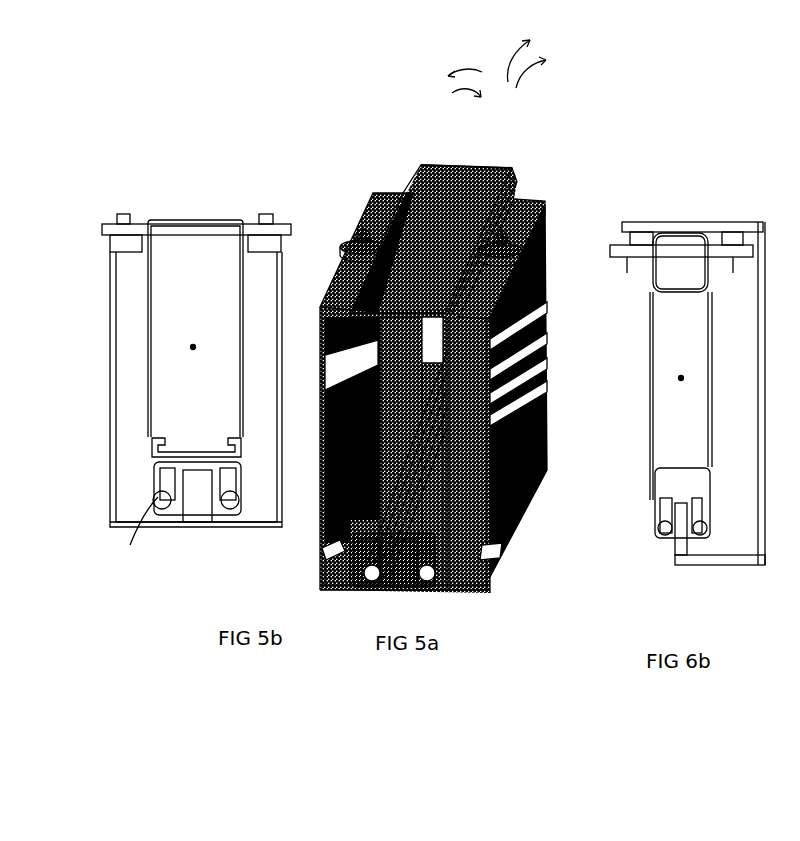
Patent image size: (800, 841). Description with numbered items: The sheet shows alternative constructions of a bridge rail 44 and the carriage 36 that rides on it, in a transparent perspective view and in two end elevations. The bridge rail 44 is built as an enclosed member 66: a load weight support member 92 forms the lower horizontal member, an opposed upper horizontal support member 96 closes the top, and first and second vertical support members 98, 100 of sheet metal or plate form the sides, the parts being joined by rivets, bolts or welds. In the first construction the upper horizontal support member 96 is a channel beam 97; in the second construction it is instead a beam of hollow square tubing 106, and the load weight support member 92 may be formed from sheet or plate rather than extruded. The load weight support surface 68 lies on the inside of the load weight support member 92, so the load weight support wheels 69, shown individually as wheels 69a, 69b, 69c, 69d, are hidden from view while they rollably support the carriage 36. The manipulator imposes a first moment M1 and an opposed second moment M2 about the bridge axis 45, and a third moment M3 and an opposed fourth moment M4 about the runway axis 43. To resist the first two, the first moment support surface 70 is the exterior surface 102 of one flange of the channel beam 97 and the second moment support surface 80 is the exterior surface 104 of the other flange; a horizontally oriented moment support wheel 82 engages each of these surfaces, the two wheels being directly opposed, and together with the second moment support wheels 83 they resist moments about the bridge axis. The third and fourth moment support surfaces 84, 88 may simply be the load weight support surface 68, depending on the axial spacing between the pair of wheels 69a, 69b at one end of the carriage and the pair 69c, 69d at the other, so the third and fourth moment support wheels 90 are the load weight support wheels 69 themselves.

In FIG. 5B, the carriage 36 is at (265, 529).
In FIG. 5A, the carriage 36 is at (490, 591).
In FIG. 6B, the carriage 36 is at (755, 566).
In FIG. 5A, the runway axis 43 is at (518, 355).
In FIG. 5B, the bridge rail 44 is at (213, 221).
In FIG. 5A, the bridge rail 44 is at (500, 165).
In FIG. 6B, the bridge rail 44 is at (651, 488).
In FIG. 5B, the bridge axis 45 is at (193, 347).
In FIG. 5A, the bridge axis 45 is at (500, 340).
In FIG. 6B, the bridge axis 45 is at (681, 378).
In FIG. 5B, the enclosed member 66 is at (147, 347).
In FIG. 6B, the enclosed member 66 is at (650, 418).
In FIG. 5B, the load weight support surface 68 is at (198, 587).
In FIG. 5A, the load weight support surface 68 is at (370, 612).
In FIG. 6B, the load weight support surface 68 is at (716, 583).
In FIG. 5B, the load weight support wheels 69 is at (185, 488).
In FIG. 5A, the load weight support wheels 69 is at (457, 466).
In FIG. 6B, the load weight support wheels 69 is at (676, 524).
In FIG. 5B, the load weight support wheel 69a is at (165, 478).
In FIG. 5A, the load weight support wheel 69a is at (325, 553).
In FIG. 6B, the load weight support wheel 69a is at (662, 510).
In FIG. 5B, the load weight support wheel 69b is at (228, 490).
In FIG. 5A, the load weight support wheel 69b is at (490, 553).
In FIG. 6B, the load weight support wheel 69b is at (697, 508).
In FIG. 5A, the load weight support wheel 69c is at (326, 350).
In FIG. 5A, the load weight support wheel 69d is at (516, 376).
In FIG. 5B, the first moment support surface 70 is at (92, 188).
In FIG. 6B, the first moment support surface 70 is at (632, 240).
In FIG. 5B, the second moment support surface 80 is at (264, 217).
In FIG. 6B, the second moment support surface 80 is at (740, 232).
In FIG. 5B, the moment support wheel 82 is at (128, 240).
In FIG. 5A, the moment support wheel 82 is at (366, 230).
In FIG. 6B, the moment support wheel 82 is at (629, 279).
In FIG. 5B, the second moment support wheels 83 is at (268, 257).
In FIG. 5A, the second moment support wheels 83 is at (549, 211).
In FIG. 6B, the second moment support wheels 83 is at (737, 280).
In FIG. 5B, the third moment support surface 84 is at (198, 587).
In FIG. 5A, the third moment support surface 84 is at (370, 612).
In FIG. 6B, the third moment support surface 84 is at (716, 583).
In FIG. 5B, the fourth moment support surface 88 is at (240, 503).
In FIG. 5A, the fourth moment support surface 88 is at (366, 584).
In FIG. 6B, the fourth moment support surface 88 is at (668, 535).
In FIG. 5B, the third and fourth moment support wheels 90 is at (185, 488).
In FIG. 5A, the third and fourth moment support wheels 90 is at (455, 570).
In FIG. 6B, the third and fourth moment support wheels 90 is at (676, 524).
In FIG. 5B, the load weight support member 92 is at (130, 545).
In FIG. 5A, the load weight support member 92 is at (450, 582).
In FIG. 5B, the upper horizontal support member 96 is at (195, 291).
In FIG. 5A, the upper horizontal support member 96 is at (482, 144).
In FIG. 5B, the channel beam 97 is at (164, 220).
In FIG. 5A, the channel beam 97 is at (470, 164).
In FIG. 5B, the first vertical support member 98 is at (147, 383).
In FIG. 5A, the first vertical support member 98 is at (322, 487).
In FIG. 5B, the second vertical support member 100 is at (245, 410).
In FIG. 5A, the second vertical support member 100 is at (530, 515).
In FIG. 5B, the exterior surface 102 is at (140, 230).
In FIG. 5B, the exterior surface 104 is at (310, 197).
In FIG. 5A, the exterior surface 104 is at (517, 192).
In FIG. 6B, the hollow square tubing 106 is at (683, 234).
In FIG. 5A, the first moment M1 is at (466, 63).
In FIG. 5A, the second moment M2 is at (467, 105).
In FIG. 5A, the third moment M3 is at (531, 48).
In FIG. 5A, the fourth moment M4 is at (544, 64).